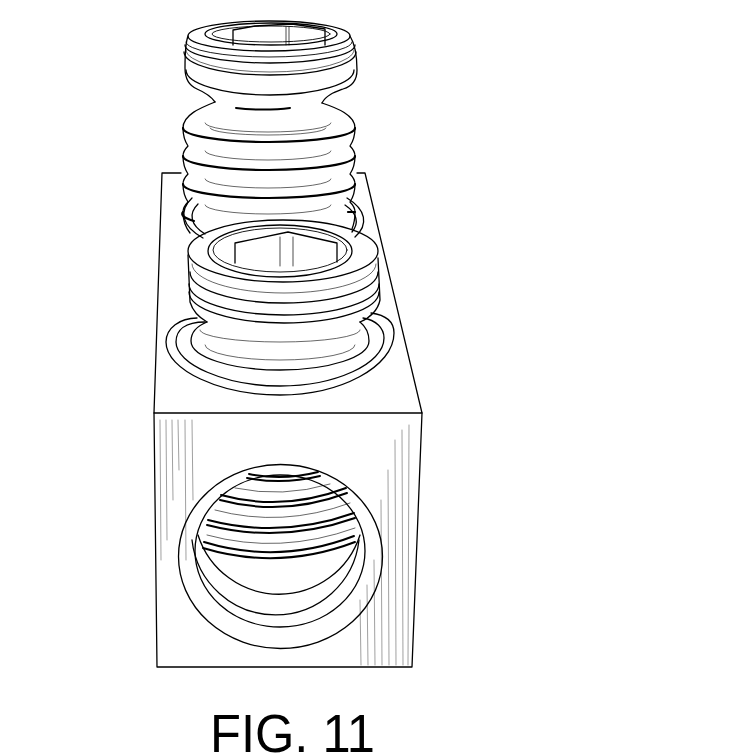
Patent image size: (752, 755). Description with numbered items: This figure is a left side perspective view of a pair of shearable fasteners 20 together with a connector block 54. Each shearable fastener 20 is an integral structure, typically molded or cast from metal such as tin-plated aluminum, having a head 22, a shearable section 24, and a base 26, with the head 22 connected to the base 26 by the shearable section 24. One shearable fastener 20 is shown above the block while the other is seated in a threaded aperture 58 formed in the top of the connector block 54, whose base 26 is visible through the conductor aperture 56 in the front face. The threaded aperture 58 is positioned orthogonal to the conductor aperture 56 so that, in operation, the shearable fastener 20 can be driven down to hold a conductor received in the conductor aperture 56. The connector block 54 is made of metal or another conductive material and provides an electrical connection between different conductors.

The shearable fastener 20 is at (286, 312).
The head 22 is at (193, 60).
The shearable section 24 is at (210, 97).
The base 26 is at (184, 165).
The connector block 54 is at (342, 420).
The conductor aperture 56 is at (318, 600).
The threaded aperture 58 is at (391, 352).